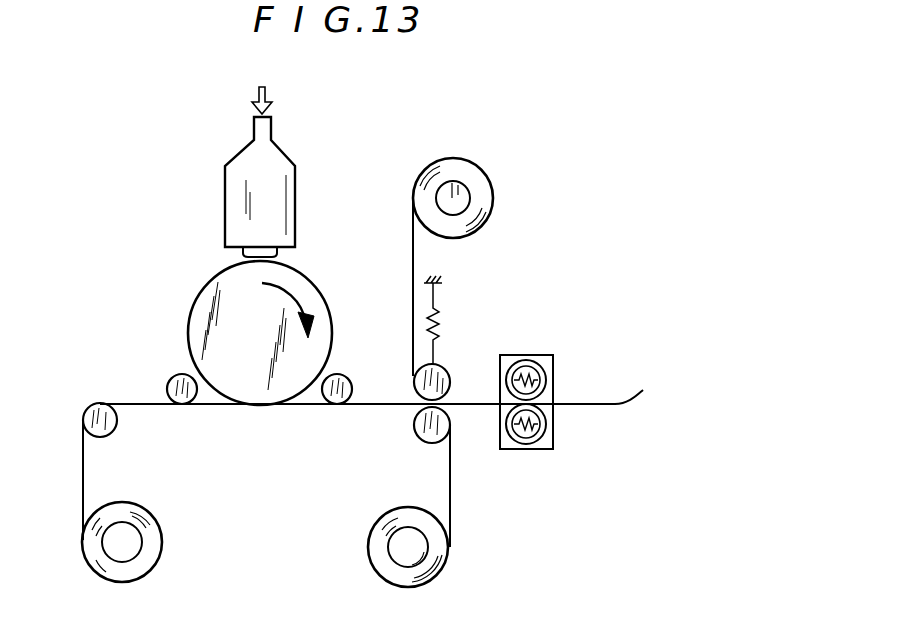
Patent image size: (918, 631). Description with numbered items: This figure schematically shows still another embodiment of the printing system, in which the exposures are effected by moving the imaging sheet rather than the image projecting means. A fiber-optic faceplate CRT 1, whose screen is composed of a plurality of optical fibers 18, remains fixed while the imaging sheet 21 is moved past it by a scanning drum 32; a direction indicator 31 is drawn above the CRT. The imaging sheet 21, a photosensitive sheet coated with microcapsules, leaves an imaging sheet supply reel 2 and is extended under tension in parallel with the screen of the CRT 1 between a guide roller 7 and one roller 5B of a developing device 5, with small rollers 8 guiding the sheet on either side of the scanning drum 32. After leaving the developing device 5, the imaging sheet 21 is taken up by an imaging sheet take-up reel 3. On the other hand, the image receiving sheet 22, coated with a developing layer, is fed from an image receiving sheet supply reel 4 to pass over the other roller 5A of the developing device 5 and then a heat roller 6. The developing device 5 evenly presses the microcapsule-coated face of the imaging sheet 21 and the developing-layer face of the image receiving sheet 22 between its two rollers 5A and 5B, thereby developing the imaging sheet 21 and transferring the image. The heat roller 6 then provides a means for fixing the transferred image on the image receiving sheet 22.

The fiber-optic faceplate CRT 1 is at (225, 205).
The imaging sheet supply reel 2 is at (127, 537).
The imaging sheet take-up reel 3 is at (420, 549).
The image receiving sheet supply reel 4 is at (467, 195).
The developing device 5 is at (440, 360).
The roller 5A is at (452, 380).
The roller 5B is at (420, 425).
The heat roller 6 is at (527, 450).
The guide roller 7 is at (86, 420).
The guide rollers 8 is at (178, 377).
The optical fibers 18 is at (278, 255).
The imaging sheet 21 is at (120, 404).
The image receiving sheet 22 is at (413, 252).
The supply direction 31 is at (263, 87).
The scanning drum 32 is at (247, 395).